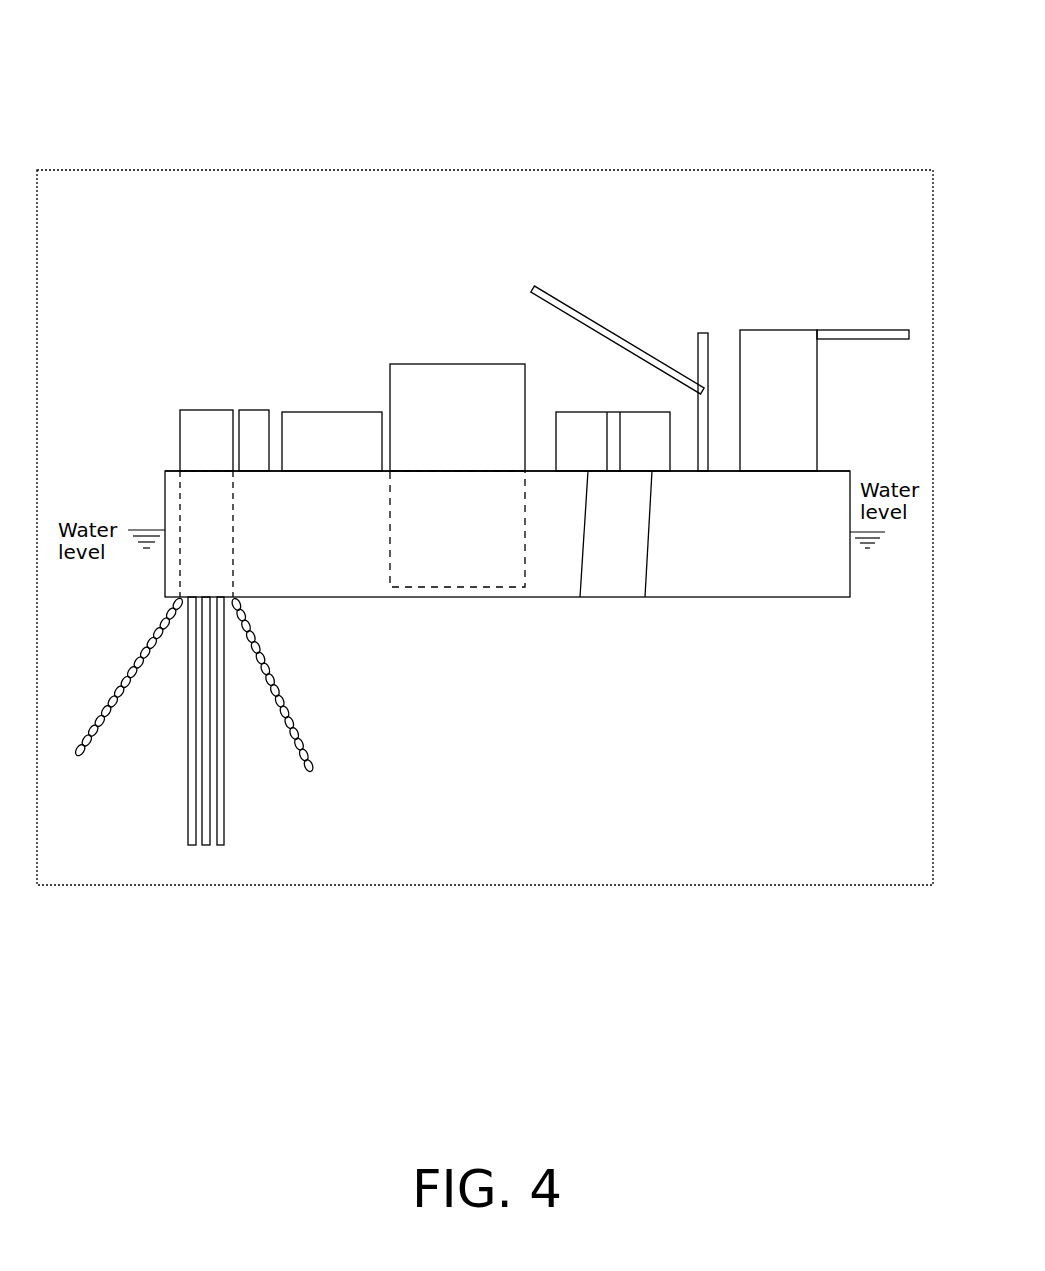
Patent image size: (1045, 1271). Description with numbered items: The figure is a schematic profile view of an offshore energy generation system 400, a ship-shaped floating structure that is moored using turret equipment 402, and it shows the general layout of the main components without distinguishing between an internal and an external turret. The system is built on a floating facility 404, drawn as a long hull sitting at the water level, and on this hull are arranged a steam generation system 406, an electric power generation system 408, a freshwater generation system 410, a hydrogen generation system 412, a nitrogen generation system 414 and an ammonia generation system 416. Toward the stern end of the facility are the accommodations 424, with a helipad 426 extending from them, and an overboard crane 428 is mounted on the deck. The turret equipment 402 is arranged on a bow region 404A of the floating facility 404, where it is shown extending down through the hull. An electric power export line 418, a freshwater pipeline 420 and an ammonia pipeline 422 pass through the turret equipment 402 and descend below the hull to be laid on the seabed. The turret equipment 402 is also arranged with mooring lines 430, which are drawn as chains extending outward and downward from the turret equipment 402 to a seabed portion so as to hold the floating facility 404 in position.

The offshore energy generation system 400 is at (880, 85).
The turret equipment 402 is at (211, 462).
The floating facility 404 is at (507, 569).
The bow region 404A is at (466, 435).
The steam generation system 406 is at (332, 441).
The electric power generation system 408 is at (457, 475).
The freshwater generation system 410 is at (613, 412).
The hydrogen generation system 412 is at (274, 399).
The nitrogen generation system 414 is at (582, 583).
The ammonia generation system 416 is at (650, 575).
The electric power export line 418 is at (149, 721).
The freshwater pipeline 420 is at (170, 729).
The ammonia pipeline 422 is at (272, 721).
The accommodations 424 is at (783, 357).
The helipad 426 is at (870, 294).
The overboard crane 428 is at (619, 352).
The mooring lines 430 is at (232, 685).